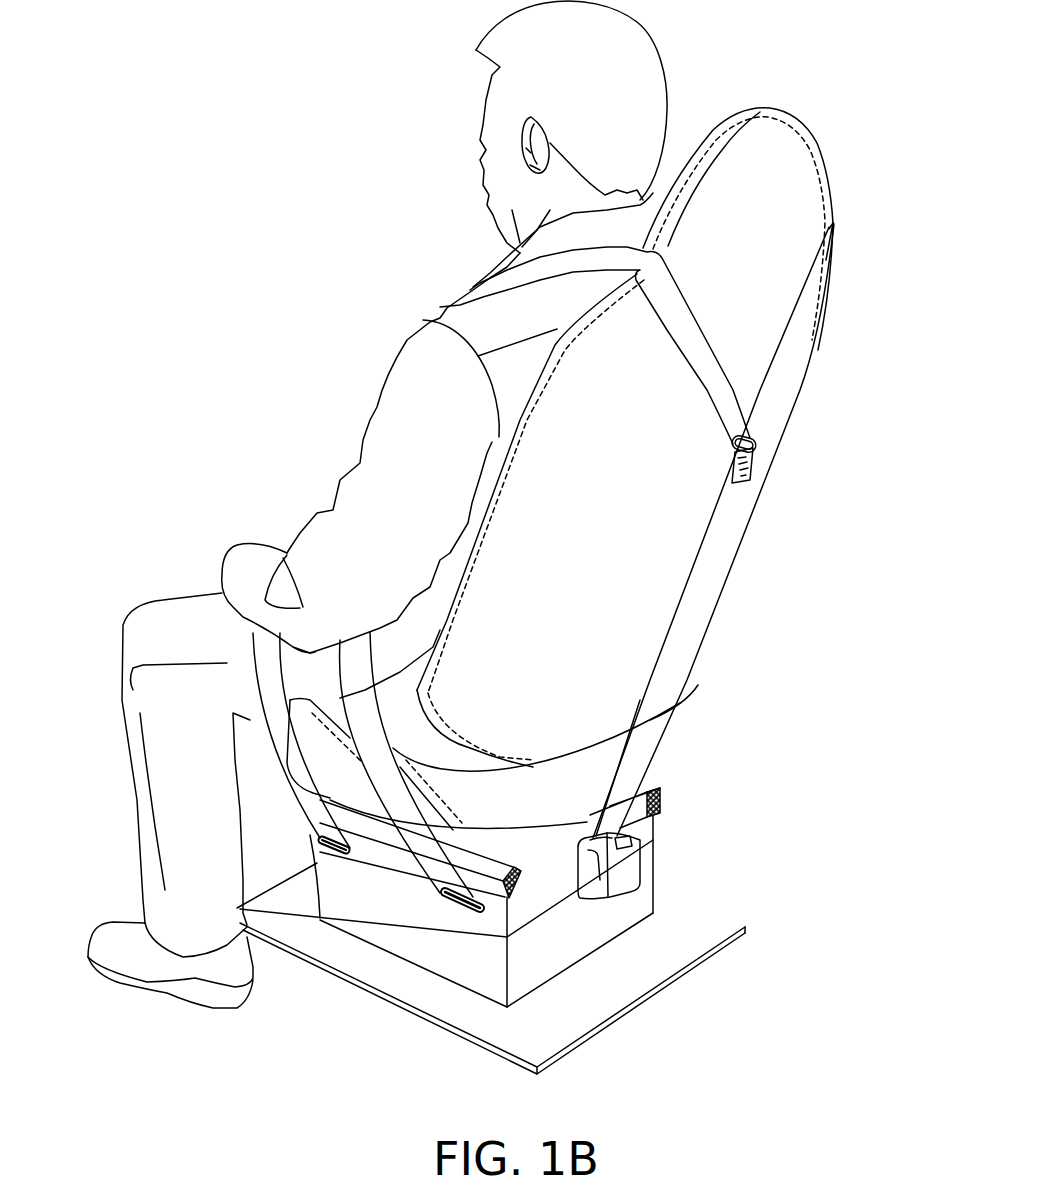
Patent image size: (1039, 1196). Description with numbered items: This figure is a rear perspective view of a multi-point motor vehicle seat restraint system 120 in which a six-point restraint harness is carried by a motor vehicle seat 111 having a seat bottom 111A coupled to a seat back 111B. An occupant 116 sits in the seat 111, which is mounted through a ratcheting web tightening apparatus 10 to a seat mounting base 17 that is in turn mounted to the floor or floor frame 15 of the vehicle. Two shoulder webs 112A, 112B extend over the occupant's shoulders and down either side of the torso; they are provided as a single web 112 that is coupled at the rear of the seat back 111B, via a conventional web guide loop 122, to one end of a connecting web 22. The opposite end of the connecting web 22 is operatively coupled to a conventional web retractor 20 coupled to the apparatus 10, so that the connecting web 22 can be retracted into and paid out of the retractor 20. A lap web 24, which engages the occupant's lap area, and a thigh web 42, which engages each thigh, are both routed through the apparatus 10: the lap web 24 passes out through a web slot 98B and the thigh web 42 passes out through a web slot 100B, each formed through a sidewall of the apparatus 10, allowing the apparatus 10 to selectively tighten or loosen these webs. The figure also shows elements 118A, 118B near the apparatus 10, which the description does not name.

The ratcheting web tightening apparatus 10 is at (403, 866).
The floor or floor frame 15 is at (717, 927).
The seat mounting base 17 is at (473, 970).
The web retractor 20 is at (632, 858).
The connecting web 22 is at (733, 513).
The lap web 24 is at (417, 677).
The thigh web 42 is at (260, 655).
The web slot 98B is at (463, 913).
The web slot 100B is at (327, 913).
The motor vehicle seat 111 is at (740, 607).
The seat bottom 111A is at (643, 770).
The seat back 111B is at (820, 337).
The single web 112 is at (797, 367).
The shoulder web 112A is at (837, 237).
The shoulder web 112B is at (690, 323).
The occupant 116 is at (455, 433).
The first rail anchor 118A is at (657, 813).
The second rail anchor 118B is at (490, 890).
The multi-point motor vehicle seat restraint system 120 is at (303, 194).
The web guide loop 122 is at (767, 442).